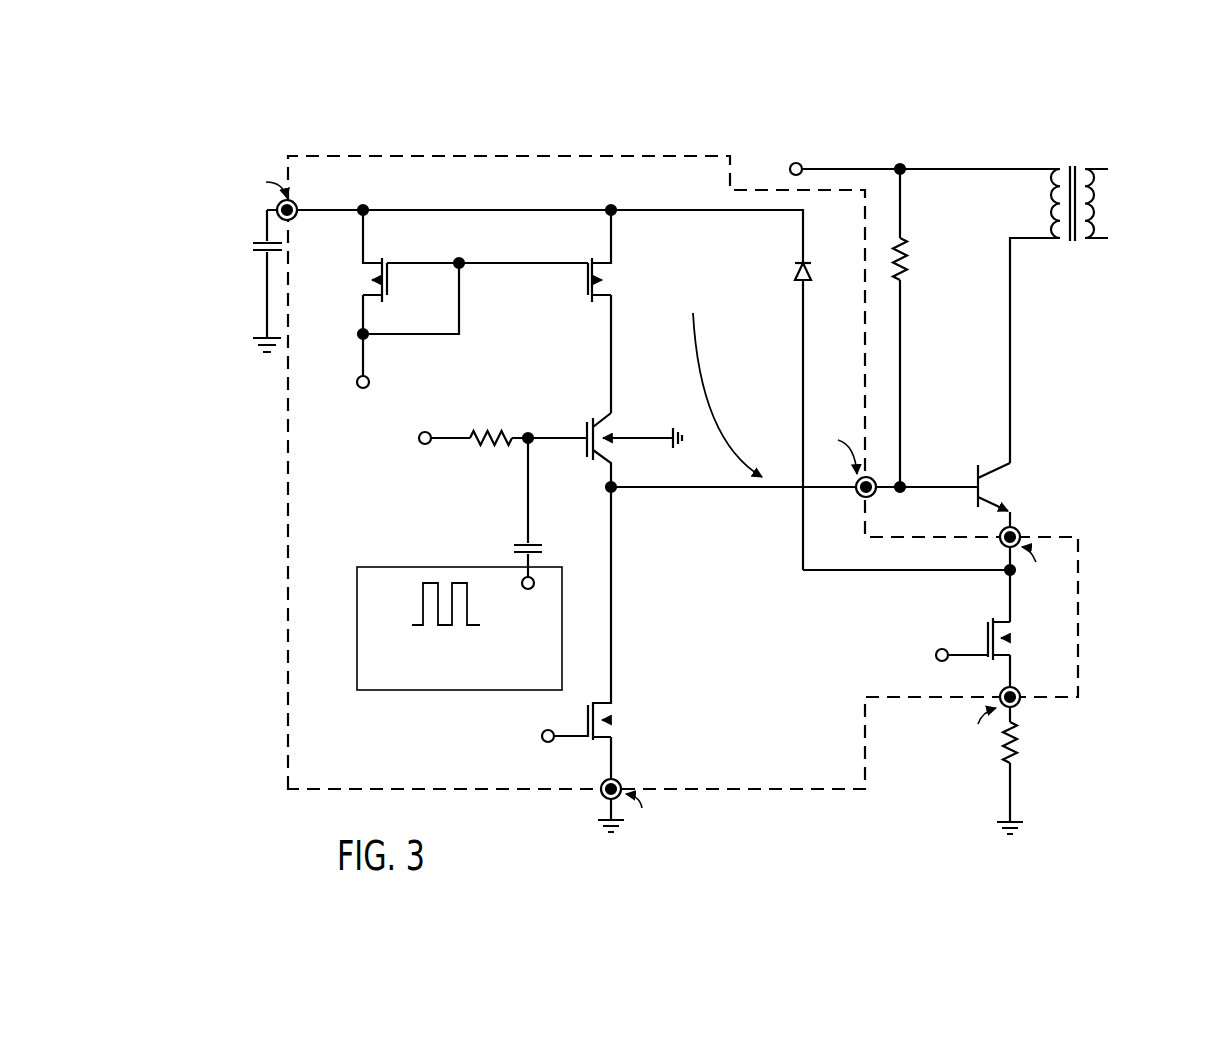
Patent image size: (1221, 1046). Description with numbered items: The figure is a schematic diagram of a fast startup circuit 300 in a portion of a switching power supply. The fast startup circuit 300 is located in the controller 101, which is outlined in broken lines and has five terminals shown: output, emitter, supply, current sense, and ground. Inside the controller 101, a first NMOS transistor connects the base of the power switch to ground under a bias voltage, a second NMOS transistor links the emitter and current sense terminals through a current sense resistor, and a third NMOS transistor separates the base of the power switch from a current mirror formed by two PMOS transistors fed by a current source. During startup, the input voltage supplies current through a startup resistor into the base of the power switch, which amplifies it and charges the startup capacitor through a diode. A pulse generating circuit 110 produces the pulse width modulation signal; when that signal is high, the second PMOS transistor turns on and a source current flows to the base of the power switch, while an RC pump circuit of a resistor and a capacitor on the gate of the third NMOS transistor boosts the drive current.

The fast startup circuit 300 is at (1116, 121).
The controller 101 is at (288, 643).
The pulse generating circuit 110 is at (414, 674).